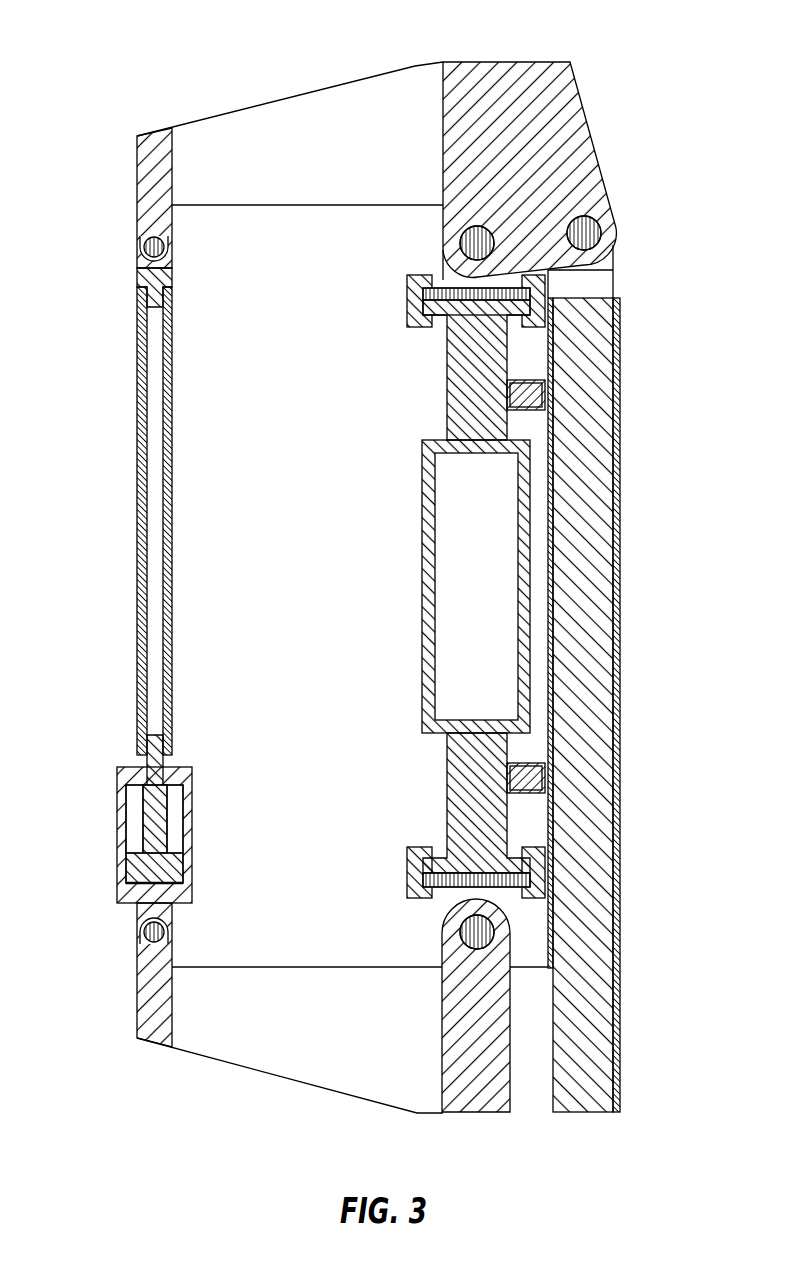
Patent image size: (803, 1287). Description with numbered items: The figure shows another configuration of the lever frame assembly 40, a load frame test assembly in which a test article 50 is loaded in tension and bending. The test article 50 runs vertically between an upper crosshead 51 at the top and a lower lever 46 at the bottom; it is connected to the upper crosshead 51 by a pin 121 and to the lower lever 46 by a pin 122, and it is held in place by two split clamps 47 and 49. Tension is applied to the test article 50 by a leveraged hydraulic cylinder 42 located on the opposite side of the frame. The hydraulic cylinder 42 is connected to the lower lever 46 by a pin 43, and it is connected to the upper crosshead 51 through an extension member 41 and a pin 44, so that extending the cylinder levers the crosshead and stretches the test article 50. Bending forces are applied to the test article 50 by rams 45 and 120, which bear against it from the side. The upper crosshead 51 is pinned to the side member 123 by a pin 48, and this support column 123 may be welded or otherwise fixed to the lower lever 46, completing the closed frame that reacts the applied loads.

The lever frame assembly 40 is at (158, 50).
The extension member 41 is at (140, 520).
The hydraulic cylinder 42 is at (122, 837).
The pin 43 is at (150, 934).
The pin 44 is at (290, 133).
The ram 45 is at (527, 758).
The lower lever 46 is at (342, 1040).
The split clamp 47 is at (513, 295).
The pin 48 is at (600, 232).
The split clamp 49 is at (543, 873).
The test article 50 is at (507, 818).
The upper crosshead 51 is at (577, 137).
The ram 120 is at (533, 397).
The pin 121 is at (477, 242).
The pin 122 is at (477, 932).
The side member 123 is at (583, 503).